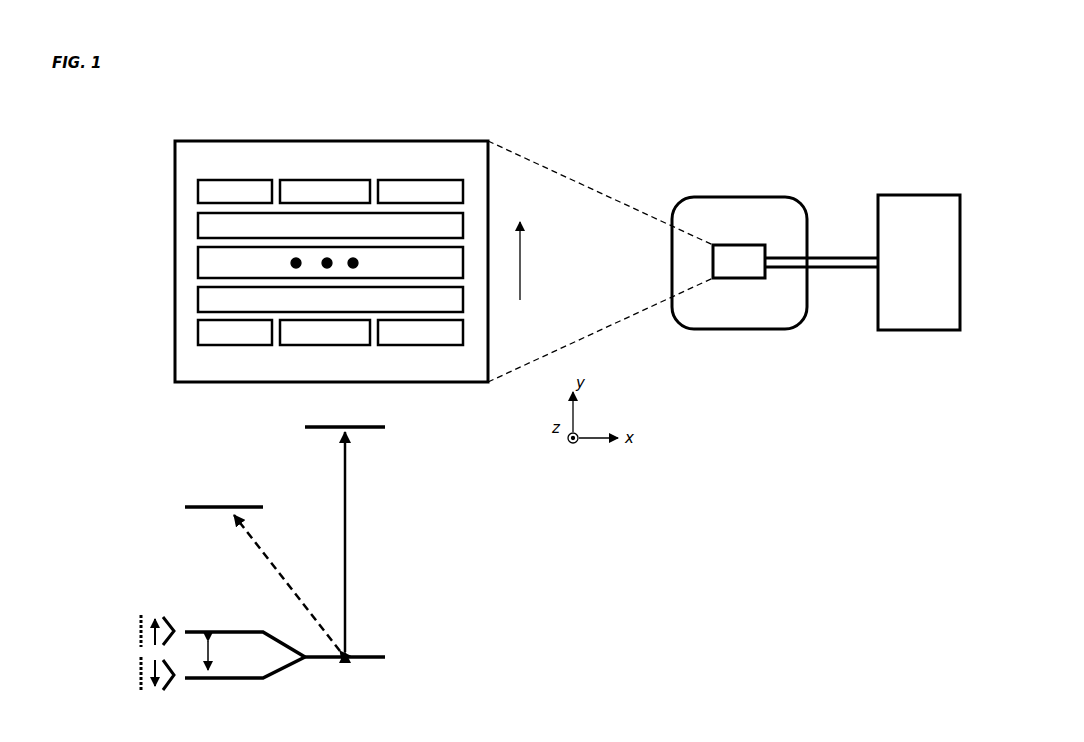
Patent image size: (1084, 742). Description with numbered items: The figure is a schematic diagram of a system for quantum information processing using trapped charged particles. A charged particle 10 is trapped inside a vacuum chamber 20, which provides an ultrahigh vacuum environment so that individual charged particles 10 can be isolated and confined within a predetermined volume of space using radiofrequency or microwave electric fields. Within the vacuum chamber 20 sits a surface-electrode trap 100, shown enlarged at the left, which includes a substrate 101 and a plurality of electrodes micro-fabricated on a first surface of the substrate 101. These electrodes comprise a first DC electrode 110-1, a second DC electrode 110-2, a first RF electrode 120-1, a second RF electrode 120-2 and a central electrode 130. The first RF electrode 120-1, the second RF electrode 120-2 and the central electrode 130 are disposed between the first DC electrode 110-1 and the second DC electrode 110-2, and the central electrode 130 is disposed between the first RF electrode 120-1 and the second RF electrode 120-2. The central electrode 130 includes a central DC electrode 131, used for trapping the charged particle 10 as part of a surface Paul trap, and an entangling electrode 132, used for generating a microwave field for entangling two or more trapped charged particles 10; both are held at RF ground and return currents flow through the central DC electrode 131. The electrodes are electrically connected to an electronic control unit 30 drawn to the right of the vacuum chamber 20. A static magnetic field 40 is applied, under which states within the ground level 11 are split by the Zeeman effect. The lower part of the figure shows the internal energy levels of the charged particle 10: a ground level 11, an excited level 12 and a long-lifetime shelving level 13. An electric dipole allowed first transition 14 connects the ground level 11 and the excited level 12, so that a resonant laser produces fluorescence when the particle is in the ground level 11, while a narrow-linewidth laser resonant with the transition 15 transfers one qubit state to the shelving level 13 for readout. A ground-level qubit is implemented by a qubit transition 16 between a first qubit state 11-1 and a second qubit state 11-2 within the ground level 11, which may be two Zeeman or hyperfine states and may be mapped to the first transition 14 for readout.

The surface-electrode trap 100 is at (319, 132).
The substrate 101 is at (223, 151).
The first DC electrode 110-1 is at (198, 190).
The second DC electrode 110-2 is at (198, 331).
The first RF electrode 120-1 is at (198, 224).
The second RF electrode 120-2 is at (198, 298).
The central electrode 130 is at (198, 262).
The central DC electrode 131 is at (296, 263).
The entangling electrode 132 is at (353, 263).
The charged particle 10 is at (320, 268).
The static magnetic field 40 is at (545, 246).
The vacuum chamber 20 is at (675, 200).
The electronic control unit 30 is at (915, 195).
The ground level 11 is at (388, 656).
The first qubit state 11-1 is at (130, 673).
The second qubit state 11-2 is at (130, 629).
The excited level 12 is at (388, 426).
The shelving level 13 is at (185, 505).
The first transition 14 is at (350, 521).
The transition 15 is at (270, 536).
The qubit transition 16 is at (212, 648).